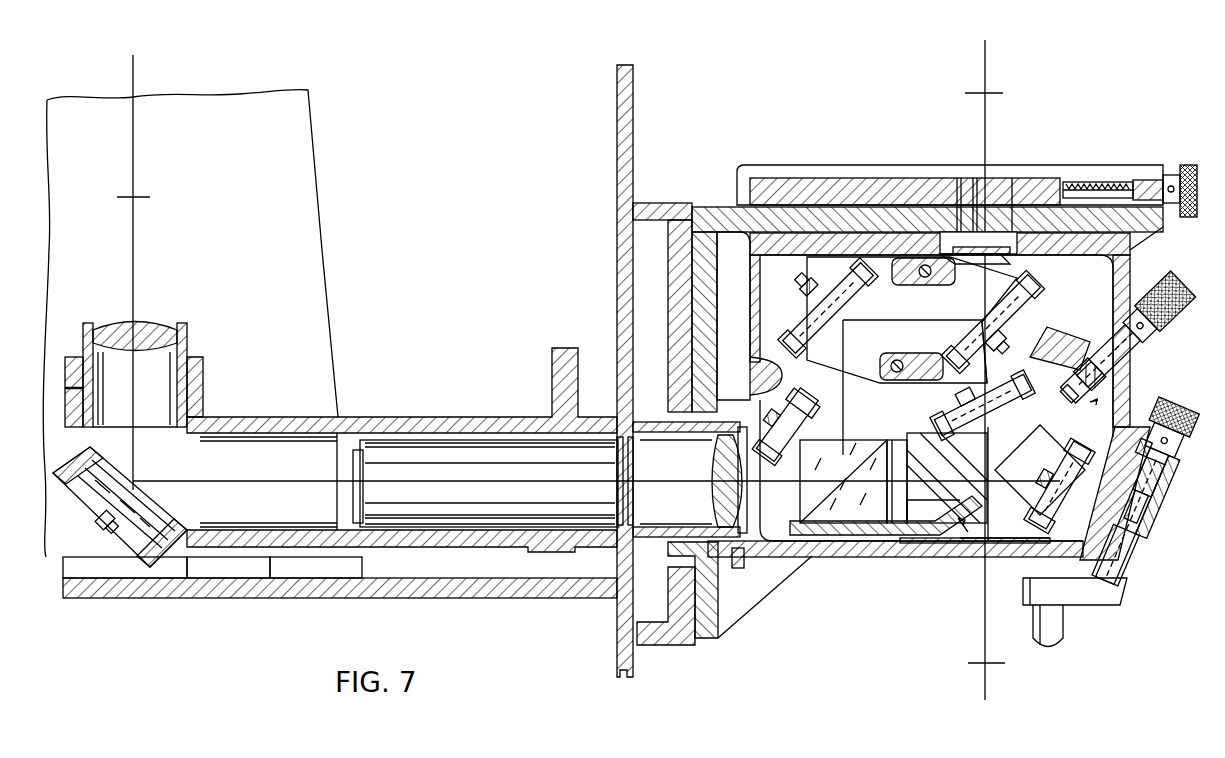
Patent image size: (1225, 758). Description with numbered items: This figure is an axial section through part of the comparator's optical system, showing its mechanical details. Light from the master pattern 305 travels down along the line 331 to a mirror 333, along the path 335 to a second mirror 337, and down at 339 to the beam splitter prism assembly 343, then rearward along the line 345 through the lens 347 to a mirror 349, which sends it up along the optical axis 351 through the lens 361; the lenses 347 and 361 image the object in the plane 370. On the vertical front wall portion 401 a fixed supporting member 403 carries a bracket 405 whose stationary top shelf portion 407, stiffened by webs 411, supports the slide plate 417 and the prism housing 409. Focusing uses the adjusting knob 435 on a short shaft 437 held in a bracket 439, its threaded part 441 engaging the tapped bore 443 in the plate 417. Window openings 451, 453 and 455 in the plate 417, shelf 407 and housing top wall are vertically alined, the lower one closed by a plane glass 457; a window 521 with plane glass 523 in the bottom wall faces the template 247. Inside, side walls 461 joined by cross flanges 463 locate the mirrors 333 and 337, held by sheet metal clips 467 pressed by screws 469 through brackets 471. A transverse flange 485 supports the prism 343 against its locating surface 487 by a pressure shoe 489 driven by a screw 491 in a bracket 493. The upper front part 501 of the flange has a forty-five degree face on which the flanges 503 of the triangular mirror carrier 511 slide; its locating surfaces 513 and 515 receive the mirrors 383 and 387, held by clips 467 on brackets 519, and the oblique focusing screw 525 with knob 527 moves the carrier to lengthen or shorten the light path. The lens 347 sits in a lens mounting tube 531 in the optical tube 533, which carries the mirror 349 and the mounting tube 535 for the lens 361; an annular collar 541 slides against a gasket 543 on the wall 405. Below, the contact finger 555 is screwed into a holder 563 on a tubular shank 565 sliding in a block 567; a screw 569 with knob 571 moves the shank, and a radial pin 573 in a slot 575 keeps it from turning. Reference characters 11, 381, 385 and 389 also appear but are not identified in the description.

The section line 11 is at (1037, 465).
The template 247 is at (970, 665).
The master pattern 305 is at (995, 93).
The line of light beam 331 is at (985, 125).
The mirror 333 is at (960, 352).
The light path 335 is at (871, 340).
The second mirror 337 is at (880, 333).
The downward beam path 339 is at (843, 426).
The beam splitter prism assembly 343 is at (805, 492).
The line of light beam 345 is at (490, 481).
The lens 347 is at (715, 490).
The mirror 349 is at (155, 508).
The optical axis 351 is at (133, 263).
The lens 361 is at (150, 322).
The image plane 370 is at (150, 197).
The axis 381 is at (985, 620).
The mirror 383 is at (966, 410).
The prism block 385 is at (1035, 470).
The mirror 387 is at (1045, 517).
The support 389 is at (950, 488).
The vertical front wall portion 401 is at (633, 105).
The fixed supporting member 403 is at (658, 203).
The bracket 405 is at (700, 262).
The stationary top shelf portion 407 is at (1155, 222).
The housing 409 is at (1128, 258).
The strengthening webs 411 is at (740, 622).
The slide member 417 is at (816, 180).
The adjusting knob 435 is at (1192, 167).
The short shaft 437 is at (1172, 178).
The bracket 439 is at (1143, 182).
The threaded part of shaft 441 is at (1078, 185).
The threaded bore 443 is at (1065, 182).
The window opening 451 is at (958, 182).
The window opening 453 is at (972, 212).
The window opening 455 is at (1003, 249).
The plane glass 457 is at (1000, 260).
The side walls of mirror support 461 is at (875, 372).
The cross flanges 463 is at (920, 378).
The sheet metal clip 467 is at (95, 500).
The screw 469 is at (815, 290).
The bracket 471 is at (815, 303).
The transverse flange 485 is at (893, 545).
The vertical locating surface 487 is at (909, 467).
The pressure shoe 489 is at (805, 428).
The screw 491 is at (783, 420).
The bracket 493 is at (775, 440).
The upper front part of flange 501 is at (1068, 347).
The lateral flanges of mirror carrier 503 is at (978, 498).
The triangular mirror carrier 511 is at (957, 470).
The locating surfaces 513 is at (947, 448).
The locating surfaces 515 is at (1060, 453).
The bracket 519 is at (1062, 358).
The window 521 is at (980, 557).
The plane glass 523 is at (998, 557).
The oblique focusing screw 525 is at (1100, 385).
The knob 527 is at (1183, 300).
The lens mounting tube 531 is at (688, 440).
The optical tube 533 is at (472, 547).
The mounting tube 535 is at (180, 373).
The annular collar 541 is at (812, 526).
The gasket 543 is at (740, 568).
The upper contact finger 555 is at (1062, 635).
The holder 563 is at (1105, 605).
The tubular shank 565 is at (1137, 570).
The block 567 is at (1148, 528).
The screw 569 is at (1160, 503).
The knob 571 is at (1180, 415).
The radial pin 573 is at (1145, 553).
The slot 575 is at (1127, 567).